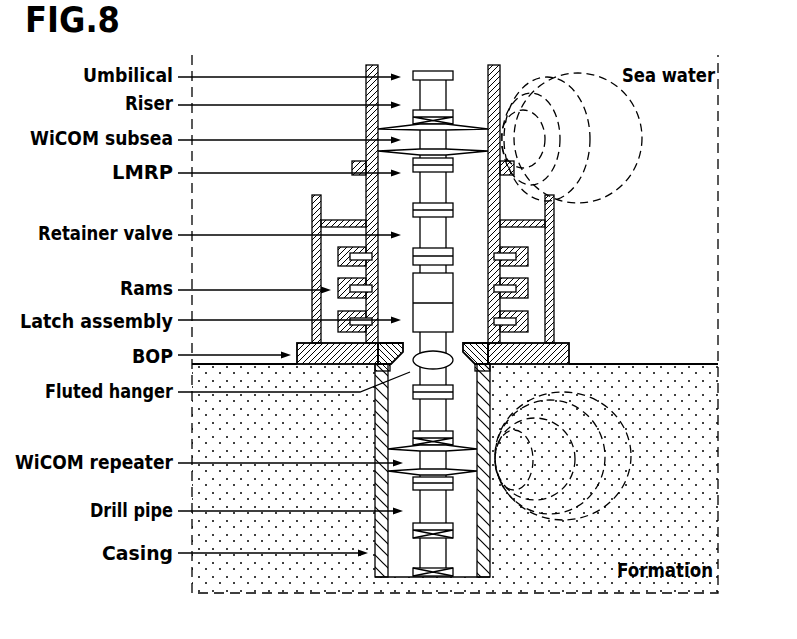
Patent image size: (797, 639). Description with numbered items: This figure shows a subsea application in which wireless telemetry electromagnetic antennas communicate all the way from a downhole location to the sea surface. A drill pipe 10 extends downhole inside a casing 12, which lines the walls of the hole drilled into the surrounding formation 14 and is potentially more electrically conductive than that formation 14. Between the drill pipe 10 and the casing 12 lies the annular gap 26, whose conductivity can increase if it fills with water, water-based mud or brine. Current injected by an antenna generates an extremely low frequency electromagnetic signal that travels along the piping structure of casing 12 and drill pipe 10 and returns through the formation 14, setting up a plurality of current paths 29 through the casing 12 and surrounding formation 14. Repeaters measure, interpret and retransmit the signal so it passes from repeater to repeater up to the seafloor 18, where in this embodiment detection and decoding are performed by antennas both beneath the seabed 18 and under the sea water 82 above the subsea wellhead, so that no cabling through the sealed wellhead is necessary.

The drill pipe 10 is at (432, 513).
The casing 12 is at (482, 567).
The formation 14 is at (688, 420).
The seafloor 18 is at (657, 364).
The gap 26 is at (403, 548).
The current paths 29 is at (591, 398).
The sea water 82 is at (684, 233).